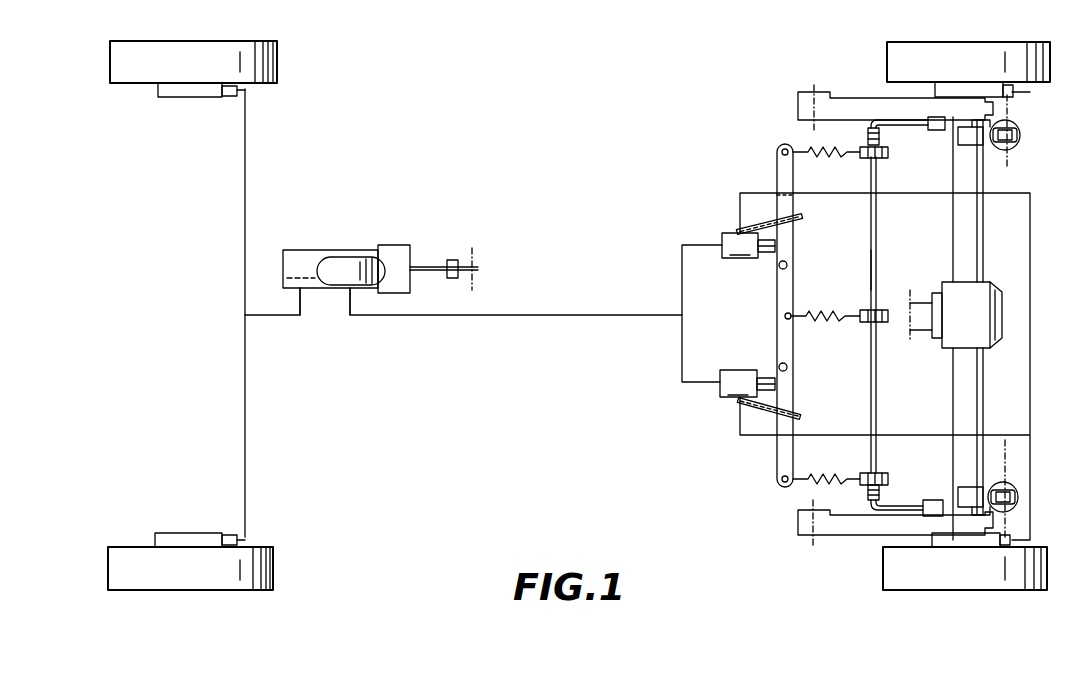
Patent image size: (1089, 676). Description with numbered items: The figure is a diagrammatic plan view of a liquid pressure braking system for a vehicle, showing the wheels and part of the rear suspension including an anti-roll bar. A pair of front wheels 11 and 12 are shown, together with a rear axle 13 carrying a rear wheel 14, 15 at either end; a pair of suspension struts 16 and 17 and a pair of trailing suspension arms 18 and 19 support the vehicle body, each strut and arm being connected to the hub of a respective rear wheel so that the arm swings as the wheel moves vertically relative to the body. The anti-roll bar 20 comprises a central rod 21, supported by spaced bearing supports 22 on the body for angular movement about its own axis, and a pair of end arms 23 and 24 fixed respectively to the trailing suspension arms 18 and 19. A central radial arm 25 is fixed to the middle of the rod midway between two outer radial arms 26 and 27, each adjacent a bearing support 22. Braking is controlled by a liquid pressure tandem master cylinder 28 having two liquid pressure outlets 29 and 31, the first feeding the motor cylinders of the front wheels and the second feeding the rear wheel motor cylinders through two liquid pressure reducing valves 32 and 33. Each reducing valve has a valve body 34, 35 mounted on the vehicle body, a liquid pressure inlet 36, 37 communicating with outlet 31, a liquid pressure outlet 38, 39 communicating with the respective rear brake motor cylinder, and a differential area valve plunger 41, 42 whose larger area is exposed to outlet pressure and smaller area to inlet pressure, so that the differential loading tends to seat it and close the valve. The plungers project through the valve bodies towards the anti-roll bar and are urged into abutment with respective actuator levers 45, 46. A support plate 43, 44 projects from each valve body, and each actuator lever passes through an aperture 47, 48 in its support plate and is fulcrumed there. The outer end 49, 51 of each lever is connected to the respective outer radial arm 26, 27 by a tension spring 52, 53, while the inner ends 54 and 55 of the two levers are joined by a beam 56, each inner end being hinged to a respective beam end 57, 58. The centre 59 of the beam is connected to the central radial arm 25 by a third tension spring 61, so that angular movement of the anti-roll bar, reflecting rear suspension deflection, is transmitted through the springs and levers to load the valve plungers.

The front wheel 11 is at (278, 63).
The front wheel 12 is at (274, 571).
The rear axle 13 is at (985, 243).
The rear wheel 14 is at (887, 58).
The rear wheel 15 is at (893, 570).
The suspension strut 16 is at (1000, 152).
The suspension strut 17 is at (996, 482).
The trailing suspension arm 18 is at (870, 104).
The trailing suspension arm 19 is at (864, 528).
The anti-roll bar 20 is at (888, 246).
The central rod 21 is at (877, 270).
The bearing support 22 is at (866, 137).
The end arm 23 is at (900, 128).
The end arm 24 is at (893, 508).
The central radial arm 25 is at (866, 323).
The outer radial arm 26 is at (866, 160).
The outer radial arm 27 is at (866, 473).
The liquid pressure tandem master cylinder 28 is at (305, 254).
The liquid pressure outlet 29 is at (294, 292).
The liquid pressure outlet 31 is at (347, 292).
The liquid pressure reducing valve 32 is at (740, 245).
The liquid pressure reducing valve 33 is at (738, 383).
The valve body 34 is at (720, 238).
The valve body 35 is at (720, 392).
The liquid pressure inlet 36 is at (722, 255).
The liquid pressure inlet 37 is at (720, 374).
The liquid pressure outlet 38 is at (732, 233).
The liquid pressure outlet 39 is at (737, 404).
The differential area valve plunger 41 is at (800, 229).
The differential area valve plunger 42 is at (790, 382).
The support plate 43 is at (741, 228).
The support plate 44 is at (740, 418).
The actuator lever 45 is at (792, 240).
The actuator lever 46 is at (778, 455).
The aperture 47 is at (769, 217).
The aperture 48 is at (768, 416).
The outer end 49 is at (781, 152).
The outer end 51 is at (781, 480).
The tension spring 52 is at (828, 158).
The tension spring 53 is at (828, 472).
The inner end 54 is at (792, 266).
The inner end 55 is at (790, 367).
The beam 56 is at (778, 297).
The beam end 57 is at (779, 266).
The beam end 58 is at (780, 364).
The beam centre 59 is at (784, 316).
The third tension spring 61 is at (825, 315).